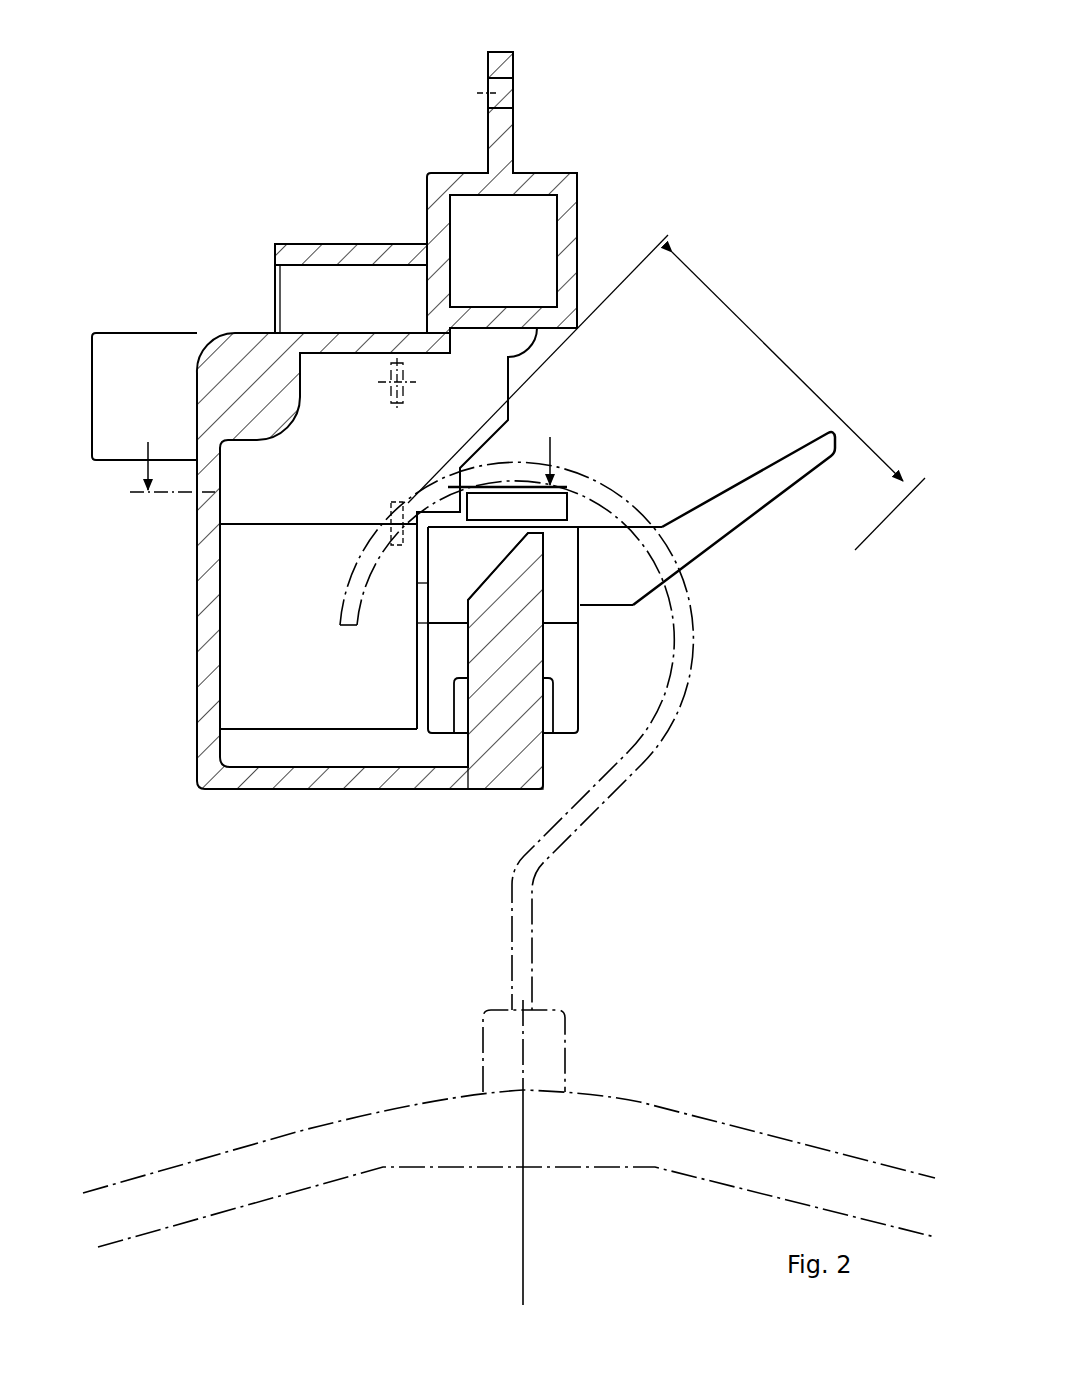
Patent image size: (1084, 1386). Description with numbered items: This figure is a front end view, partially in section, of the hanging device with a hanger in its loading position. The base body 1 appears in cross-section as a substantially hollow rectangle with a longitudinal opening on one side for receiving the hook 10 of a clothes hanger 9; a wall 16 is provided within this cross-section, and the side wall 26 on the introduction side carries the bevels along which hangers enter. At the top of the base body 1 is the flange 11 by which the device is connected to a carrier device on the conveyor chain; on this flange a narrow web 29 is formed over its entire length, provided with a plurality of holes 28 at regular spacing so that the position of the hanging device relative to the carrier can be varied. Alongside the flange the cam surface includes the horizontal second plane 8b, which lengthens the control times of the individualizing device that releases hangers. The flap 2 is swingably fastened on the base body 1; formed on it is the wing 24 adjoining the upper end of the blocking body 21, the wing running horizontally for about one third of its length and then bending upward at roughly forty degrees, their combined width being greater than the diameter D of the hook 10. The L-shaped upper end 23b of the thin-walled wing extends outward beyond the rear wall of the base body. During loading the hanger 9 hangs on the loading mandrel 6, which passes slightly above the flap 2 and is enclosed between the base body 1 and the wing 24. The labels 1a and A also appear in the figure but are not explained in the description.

The base body 1 is at (180, 240).
The lower chamber 1a is at (352, 665).
The flap 2 is at (590, 616).
The loading mandrel 6 is at (563, 505).
The second plane 8b is at (300, 253).
The clothes hanger 9 is at (373, 1130).
The hook 10 is at (620, 777).
The flange 11 is at (439, 170).
The wall 16 is at (455, 442).
The blocking body 21 is at (453, 565).
The upper end of wing 23b is at (125, 435).
The wing 24 is at (680, 532).
The side wall 26 is at (498, 765).
The holes 28 is at (507, 100).
The web 29 is at (497, 70).
The direction of actuation A is at (344, 449).
The diameter D is at (666, 392).